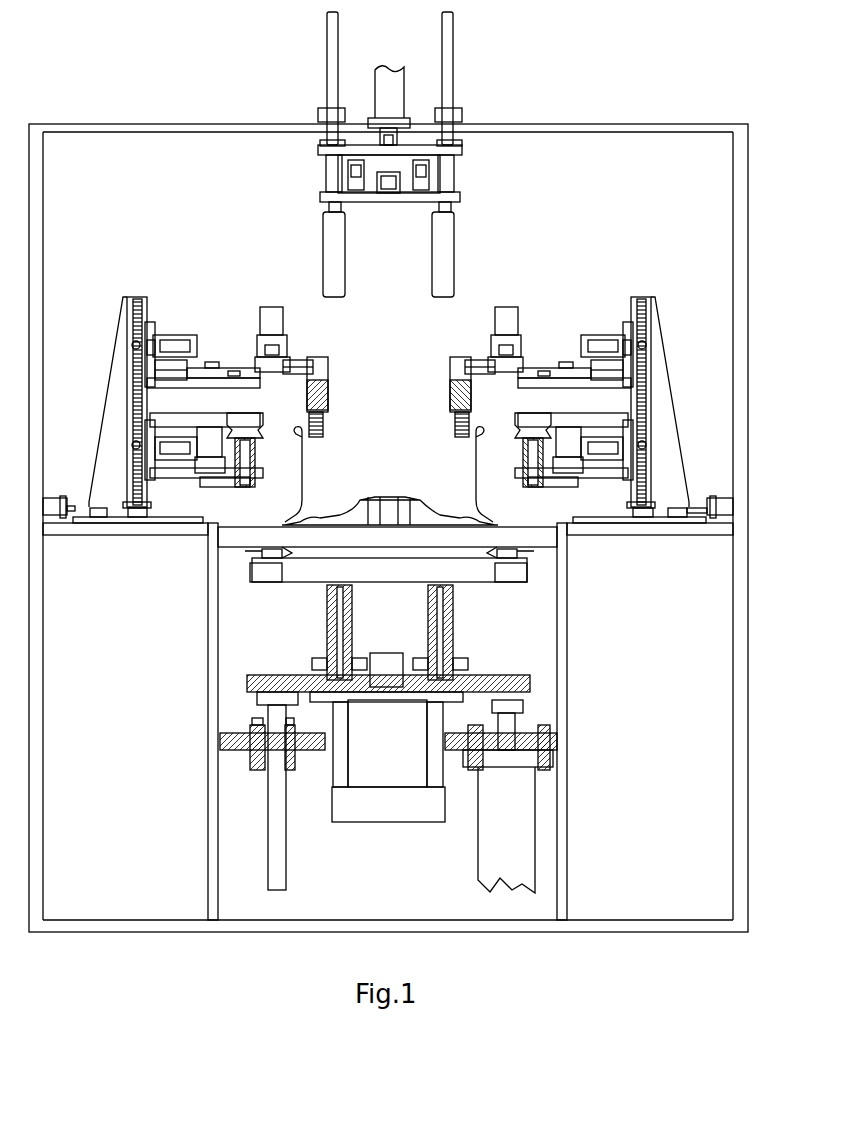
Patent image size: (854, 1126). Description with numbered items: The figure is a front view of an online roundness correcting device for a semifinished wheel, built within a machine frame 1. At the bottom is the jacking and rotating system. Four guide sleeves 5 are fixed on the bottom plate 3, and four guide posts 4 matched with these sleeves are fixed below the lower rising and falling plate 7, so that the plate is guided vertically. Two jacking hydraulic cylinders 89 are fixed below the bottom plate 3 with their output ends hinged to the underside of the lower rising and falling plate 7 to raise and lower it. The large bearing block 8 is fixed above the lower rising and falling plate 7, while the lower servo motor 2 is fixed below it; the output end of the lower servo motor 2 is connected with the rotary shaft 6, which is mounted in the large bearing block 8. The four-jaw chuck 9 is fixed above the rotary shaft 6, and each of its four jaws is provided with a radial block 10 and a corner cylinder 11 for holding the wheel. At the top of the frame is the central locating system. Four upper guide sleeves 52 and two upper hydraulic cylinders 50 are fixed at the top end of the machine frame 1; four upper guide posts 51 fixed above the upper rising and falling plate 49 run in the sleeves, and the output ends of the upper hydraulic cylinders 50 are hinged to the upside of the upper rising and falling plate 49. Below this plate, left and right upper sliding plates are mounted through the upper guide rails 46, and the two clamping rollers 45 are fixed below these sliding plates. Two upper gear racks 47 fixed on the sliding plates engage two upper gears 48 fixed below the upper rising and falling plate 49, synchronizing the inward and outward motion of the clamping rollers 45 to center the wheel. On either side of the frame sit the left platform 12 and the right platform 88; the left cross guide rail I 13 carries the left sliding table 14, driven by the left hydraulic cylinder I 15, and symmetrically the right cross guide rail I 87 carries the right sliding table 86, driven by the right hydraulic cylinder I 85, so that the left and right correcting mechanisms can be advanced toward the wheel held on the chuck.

The machine frame 1 is at (212, 908).
The lower servo motor 2 is at (368, 768).
The bottom plate 3 is at (310, 748).
The guide post 4 is at (275, 757).
The guide sleeve 5 is at (263, 738).
The rotary shaft 6 is at (278, 703).
The lower rising and falling plate 7 is at (270, 683).
The large bearing block 8 is at (328, 608).
The four-jaw chuck 9 is at (328, 572).
The radial block 10 is at (253, 560).
The corner cylinder 11 is at (210, 572).
The left platform 12 is at (180, 530).
The left cross guide rail I 13 is at (153, 523).
The left sliding table 14 is at (130, 512).
The left hydraulic cylinder I 15 is at (53, 510).
The clamping roller 45 is at (333, 228).
The upper guide rail 46 is at (333, 178).
The upper gear rack 47 is at (340, 186).
The upper gear 48 is at (335, 142).
The upper rising and falling plate 49 is at (378, 152).
The upper hydraulic cylinder 50 is at (395, 107).
The upper guide post 51 is at (447, 110).
The upper guide sleeve 52 is at (457, 118).
The right hydraulic cylinder I 85 is at (722, 510).
The right sliding table 86 is at (647, 513).
The right cross guide rail I 87 is at (623, 523).
The right platform 88 is at (597, 528).
The jacking hydraulic cylinder 89 is at (508, 797).